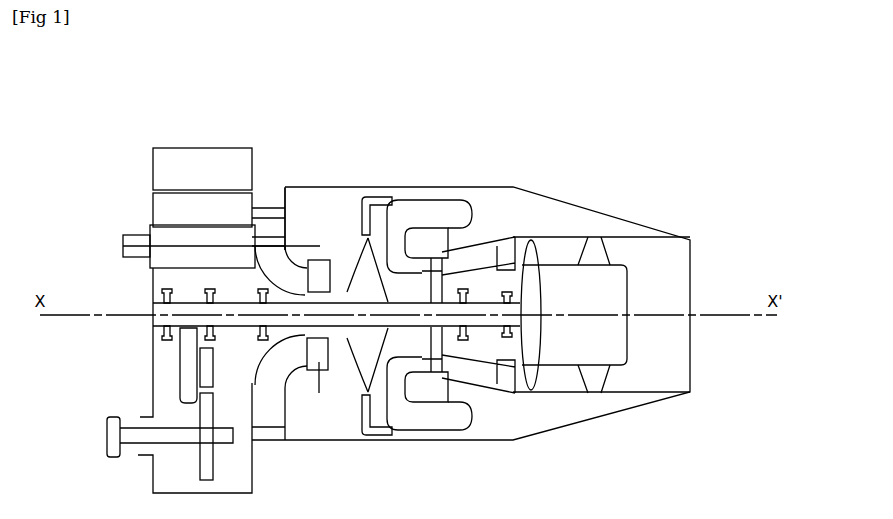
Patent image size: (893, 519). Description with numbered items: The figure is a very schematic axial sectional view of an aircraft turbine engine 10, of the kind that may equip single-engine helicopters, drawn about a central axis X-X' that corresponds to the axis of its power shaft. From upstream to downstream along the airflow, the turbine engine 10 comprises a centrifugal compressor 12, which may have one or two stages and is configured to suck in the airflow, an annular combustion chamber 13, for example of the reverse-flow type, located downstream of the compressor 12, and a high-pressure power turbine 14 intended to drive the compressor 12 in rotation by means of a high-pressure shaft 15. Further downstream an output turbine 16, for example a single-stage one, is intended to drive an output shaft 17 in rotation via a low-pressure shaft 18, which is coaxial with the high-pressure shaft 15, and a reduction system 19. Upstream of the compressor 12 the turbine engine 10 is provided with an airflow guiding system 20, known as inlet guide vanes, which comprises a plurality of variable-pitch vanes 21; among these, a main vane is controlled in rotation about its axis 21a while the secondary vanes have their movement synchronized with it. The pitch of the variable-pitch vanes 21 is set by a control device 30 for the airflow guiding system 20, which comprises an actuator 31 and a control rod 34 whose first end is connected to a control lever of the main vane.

The turbine engine 10 is at (700, 167).
The centrifugal compressor 12 is at (357, 370).
The annular combustion chamber 13 is at (456, 417).
The high-pressure power turbine 14 is at (445, 250).
The high-pressure shaft 15 is at (404, 436).
The output turbine 16 is at (535, 242).
The output shaft 17 is at (112, 458).
The low-pressure shaft 18 is at (487, 322).
The reduction system 19 is at (188, 375).
The airflow guiding system 20 is at (310, 380).
The variable-pitch vanes 21 is at (326, 266).
The axis of the main vane 21a is at (320, 280).
The control device 30 is at (114, 211).
The actuator 31 is at (121, 249).
The control rod 34 is at (263, 266).